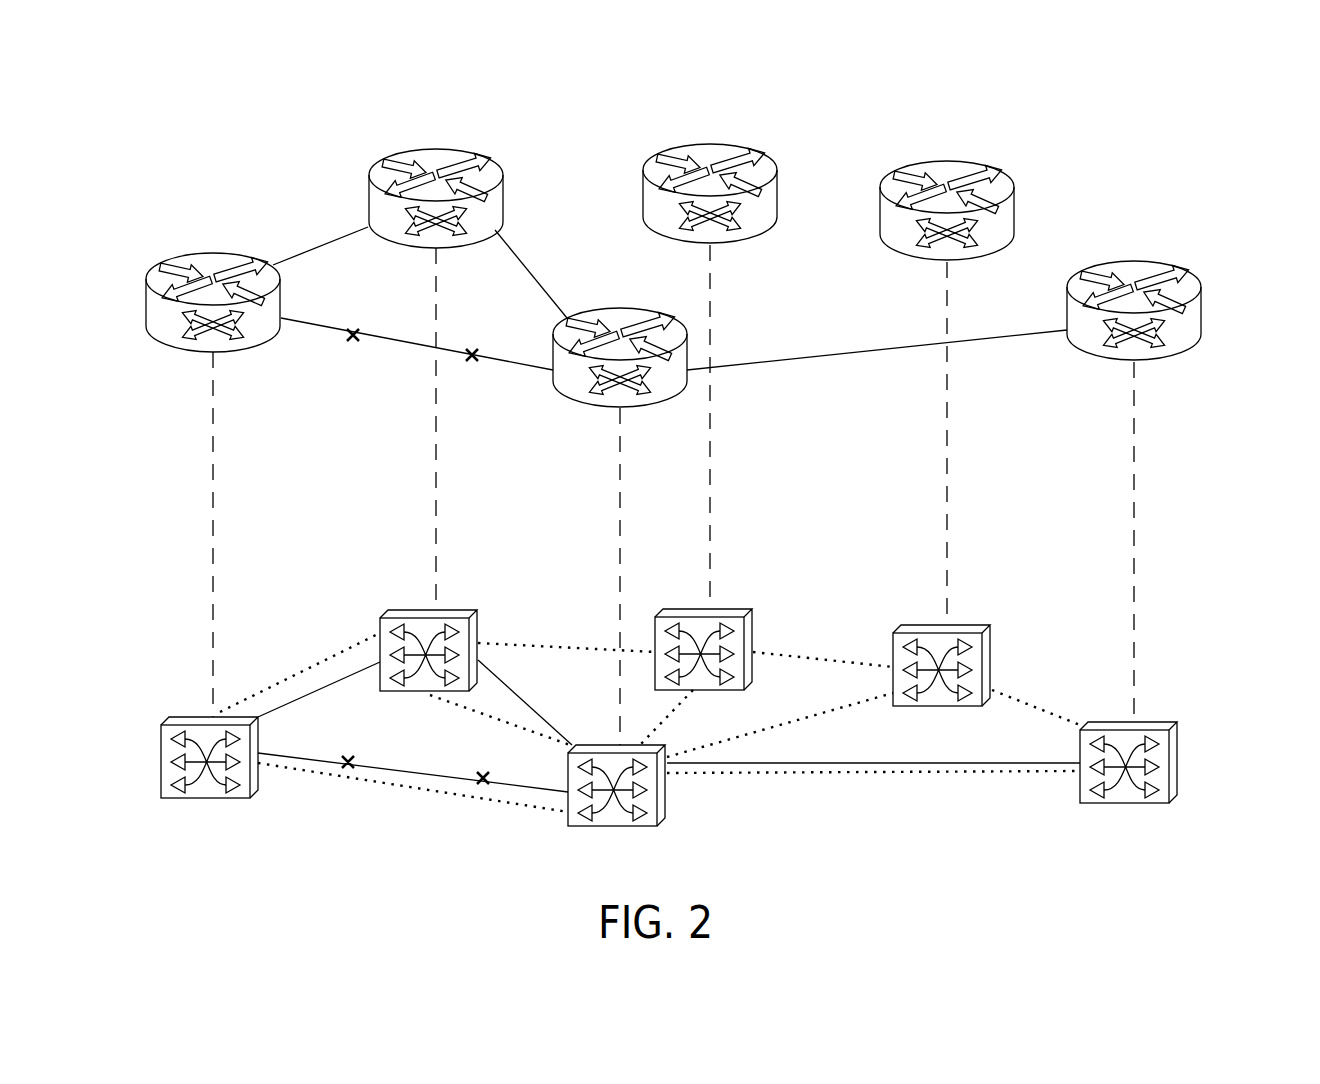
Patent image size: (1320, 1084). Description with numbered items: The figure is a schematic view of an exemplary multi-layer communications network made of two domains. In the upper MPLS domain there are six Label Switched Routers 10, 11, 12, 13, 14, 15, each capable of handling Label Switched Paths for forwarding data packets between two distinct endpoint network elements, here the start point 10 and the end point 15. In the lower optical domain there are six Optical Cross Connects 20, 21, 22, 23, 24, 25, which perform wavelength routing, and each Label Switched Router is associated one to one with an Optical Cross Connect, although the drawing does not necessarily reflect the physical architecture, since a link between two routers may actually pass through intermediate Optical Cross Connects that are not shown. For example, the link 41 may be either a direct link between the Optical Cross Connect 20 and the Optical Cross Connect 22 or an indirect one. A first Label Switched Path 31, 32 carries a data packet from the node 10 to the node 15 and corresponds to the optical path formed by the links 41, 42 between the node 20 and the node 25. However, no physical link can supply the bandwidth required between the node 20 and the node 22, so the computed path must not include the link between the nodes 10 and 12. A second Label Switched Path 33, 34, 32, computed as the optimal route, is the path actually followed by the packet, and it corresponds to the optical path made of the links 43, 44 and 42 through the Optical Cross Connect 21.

The Label Switched Router 10 is at (232, 254).
The Label Switched Router 11 is at (437, 149).
The Label Switched Router 12 is at (608, 309).
The Label Switched Router 13 is at (711, 144).
The Label Switched Router 14 is at (950, 161).
The Label Switched Router 15 is at (1133, 259).
The Optical Cross Connect 20 is at (172, 799).
The Optical Cross Connect 21 is at (410, 610).
The Optical Cross Connect 22 is at (668, 801).
The Optical Cross Connect 23 is at (722, 609).
The Optical Cross Connect 24 is at (925, 625).
The Optical Cross Connect 25 is at (1178, 768).
The first LSP link 31 is at (497, 362).
The LSP link 32 is at (843, 354).
The second LSP link 33 is at (310, 248).
The second LSP link 34 is at (532, 276).
The optical link 41 is at (408, 772).
The optical link 42 is at (870, 766).
The optical link 43 is at (318, 688).
The optical link 44 is at (545, 715).